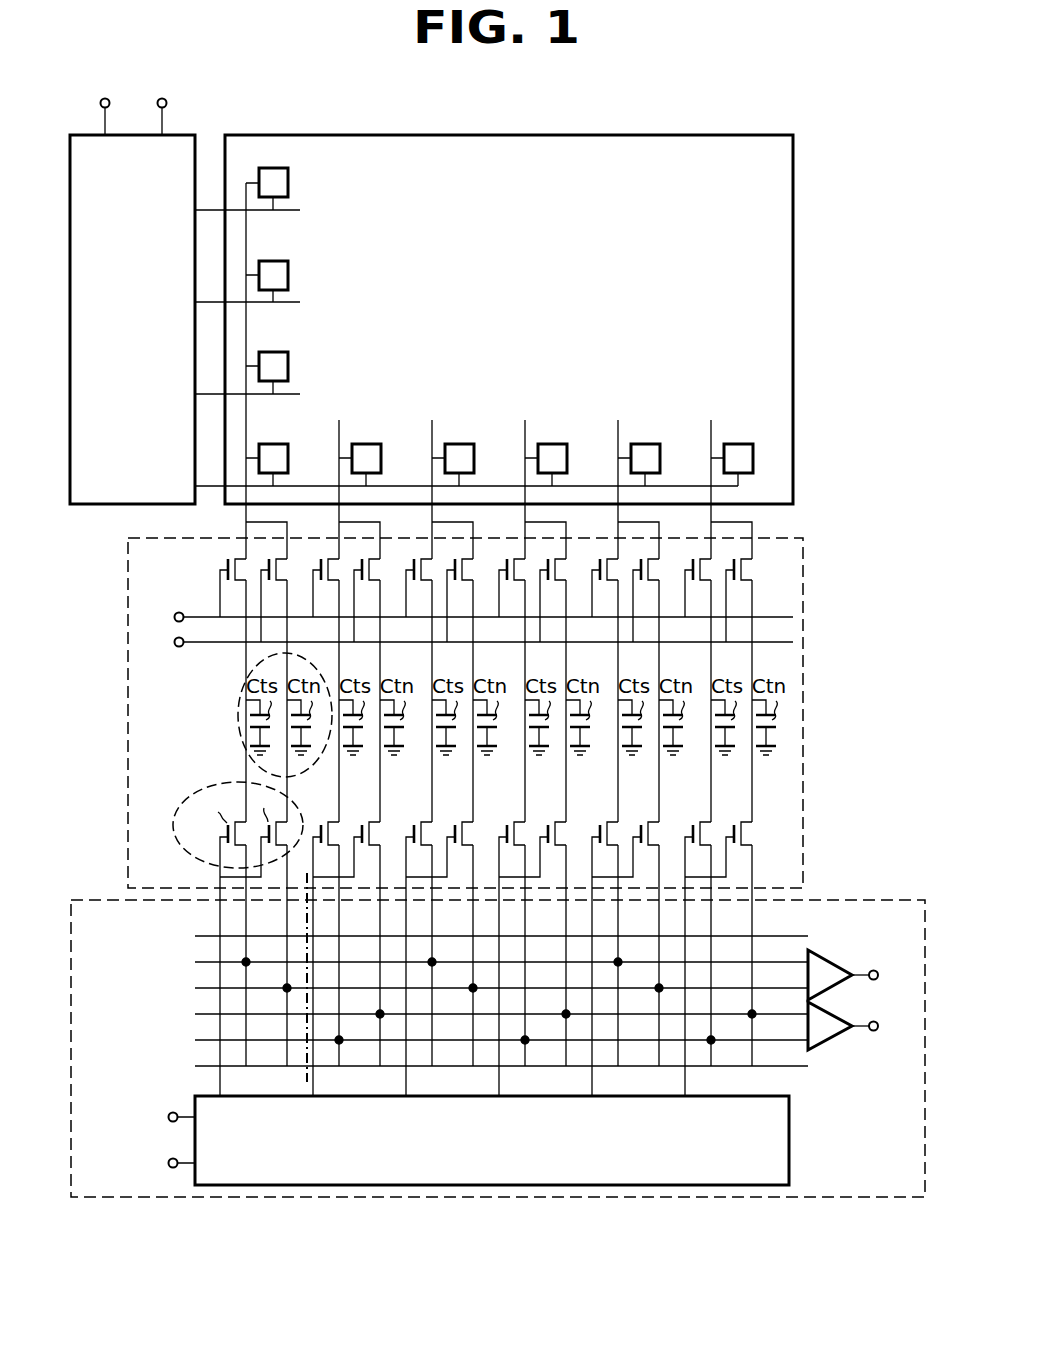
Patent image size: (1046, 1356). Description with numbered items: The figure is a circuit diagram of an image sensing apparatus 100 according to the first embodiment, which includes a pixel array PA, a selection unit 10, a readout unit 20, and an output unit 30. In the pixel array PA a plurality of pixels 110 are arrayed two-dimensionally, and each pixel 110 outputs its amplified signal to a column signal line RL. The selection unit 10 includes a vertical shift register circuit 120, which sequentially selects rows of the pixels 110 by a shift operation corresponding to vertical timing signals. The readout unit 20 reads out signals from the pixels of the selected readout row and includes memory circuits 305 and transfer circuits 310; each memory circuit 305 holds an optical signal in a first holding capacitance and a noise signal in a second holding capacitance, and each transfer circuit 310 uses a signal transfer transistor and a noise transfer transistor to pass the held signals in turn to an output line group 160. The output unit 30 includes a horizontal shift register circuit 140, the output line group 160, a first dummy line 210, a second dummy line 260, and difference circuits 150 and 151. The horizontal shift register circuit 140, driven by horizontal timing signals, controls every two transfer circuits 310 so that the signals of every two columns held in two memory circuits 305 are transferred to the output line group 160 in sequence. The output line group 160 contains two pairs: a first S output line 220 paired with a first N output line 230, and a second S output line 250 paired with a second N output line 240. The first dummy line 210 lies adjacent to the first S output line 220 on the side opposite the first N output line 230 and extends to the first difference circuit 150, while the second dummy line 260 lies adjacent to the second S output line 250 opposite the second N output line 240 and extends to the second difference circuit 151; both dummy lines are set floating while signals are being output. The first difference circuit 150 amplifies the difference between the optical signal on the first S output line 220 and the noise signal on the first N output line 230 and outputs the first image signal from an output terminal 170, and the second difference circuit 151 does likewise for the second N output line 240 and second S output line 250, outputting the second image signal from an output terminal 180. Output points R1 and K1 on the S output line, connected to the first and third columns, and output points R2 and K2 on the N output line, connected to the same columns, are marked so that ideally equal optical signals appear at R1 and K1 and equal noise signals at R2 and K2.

The image sensing apparatus 100 is at (145, 1225).
The selection unit 10 is at (210, 91).
The readout unit 20 is at (804, 580).
The output unit 30 is at (865, 1198).
The pixel 110 is at (304, 177).
The vertical shift register circuit 120 is at (192, 133).
The horizontal shift register circuit 140 is at (790, 1141).
The first difference circuit 150 is at (842, 937).
The second difference circuit 151 is at (833, 1044).
The output line group 160 is at (142, 935).
The output terminal 170 is at (897, 952).
The output terminal 180 is at (880, 1031).
The first dummy line 210 is at (215, 933).
The first S output line 220 is at (215, 959).
The first N output line 230 is at (215, 985).
The second N output line 240 is at (215, 1011).
The second S output line 250 is at (215, 1037).
The second dummy line 260 is at (215, 1063).
The memory circuit 305 is at (238, 712).
The transfer circuit 310 is at (203, 784).
The pixel array PA is at (502, 135).
The column signal line RL is at (254, 232).
The output point R1 is at (248, 958).
The output point R2 is at (285, 991).
The output point K1 is at (432, 959).
The output point K2 is at (471, 992).